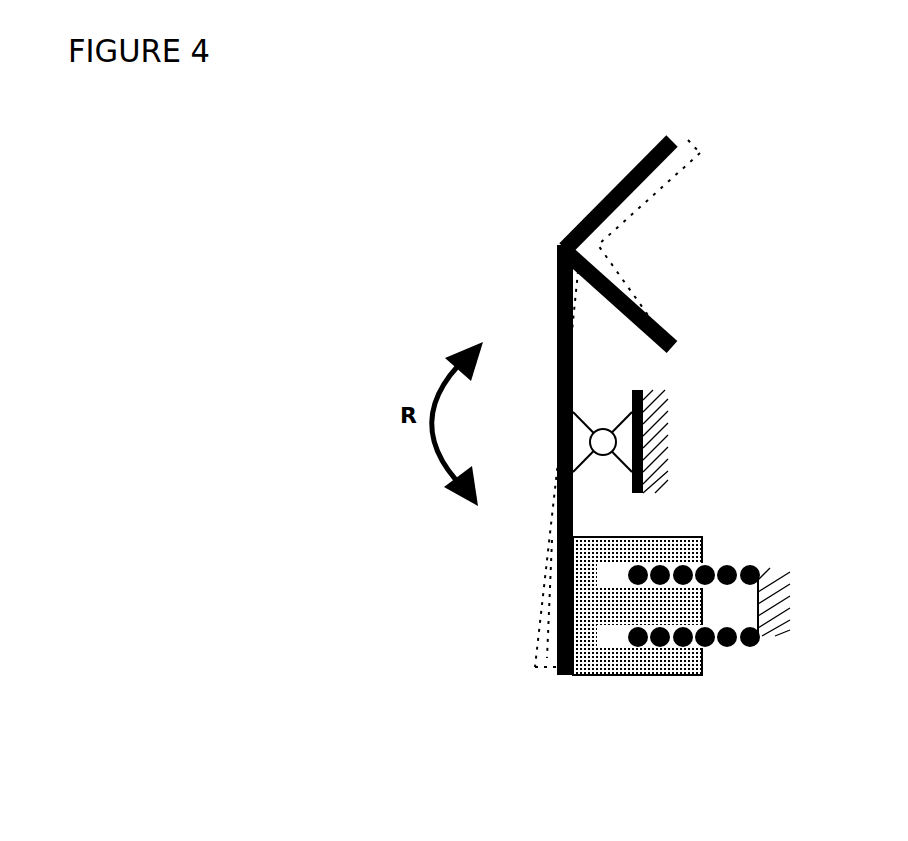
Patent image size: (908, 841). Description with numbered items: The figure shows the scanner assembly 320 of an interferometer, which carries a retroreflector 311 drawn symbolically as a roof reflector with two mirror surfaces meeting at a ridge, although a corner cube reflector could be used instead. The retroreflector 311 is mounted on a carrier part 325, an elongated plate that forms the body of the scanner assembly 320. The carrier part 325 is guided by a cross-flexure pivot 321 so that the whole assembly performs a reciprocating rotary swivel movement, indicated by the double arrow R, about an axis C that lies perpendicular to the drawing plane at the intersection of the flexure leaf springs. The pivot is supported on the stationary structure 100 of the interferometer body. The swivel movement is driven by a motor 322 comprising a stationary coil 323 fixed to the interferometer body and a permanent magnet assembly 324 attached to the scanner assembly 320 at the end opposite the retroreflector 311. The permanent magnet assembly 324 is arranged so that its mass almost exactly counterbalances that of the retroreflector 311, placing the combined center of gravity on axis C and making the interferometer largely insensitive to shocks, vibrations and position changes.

The fixed frame / housing structure 100 is at (643, 423).
The retroreflector 311 is at (628, 170).
The scanner assembly 320 is at (738, 371).
The cross-flexure pivot 321 is at (682, 461).
The motor 322 is at (666, 704).
The stationary coil 323 is at (730, 647).
The permanent magnet assembly 324 is at (607, 660).
The carrier part 325 is at (555, 288).